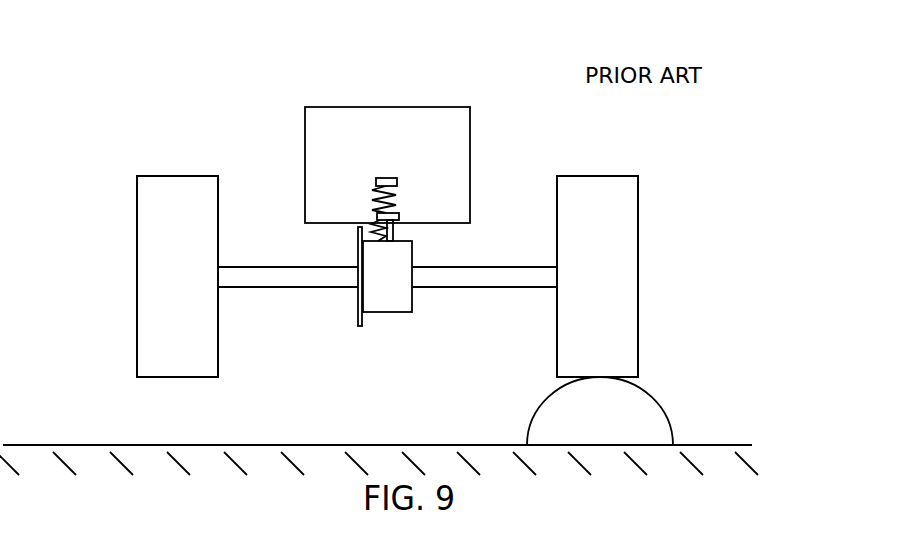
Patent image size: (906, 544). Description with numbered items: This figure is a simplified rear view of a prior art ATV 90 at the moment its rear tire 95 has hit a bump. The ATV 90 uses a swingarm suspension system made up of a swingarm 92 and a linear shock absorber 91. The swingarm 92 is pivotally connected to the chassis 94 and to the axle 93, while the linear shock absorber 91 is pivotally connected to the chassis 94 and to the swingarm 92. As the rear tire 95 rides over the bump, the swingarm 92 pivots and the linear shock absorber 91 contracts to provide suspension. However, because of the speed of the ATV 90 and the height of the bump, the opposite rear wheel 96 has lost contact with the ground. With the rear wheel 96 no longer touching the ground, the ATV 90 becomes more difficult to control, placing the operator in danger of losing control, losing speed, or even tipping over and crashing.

The prior art ATV 90 is at (263, 136).
The linear shock absorber 91 is at (399, 185).
The swingarm 92 is at (395, 223).
The axle 93 is at (484, 287).
The chassis 94 is at (398, 107).
The rear tire 95 is at (638, 268).
The rear wheel 96 is at (137, 284).